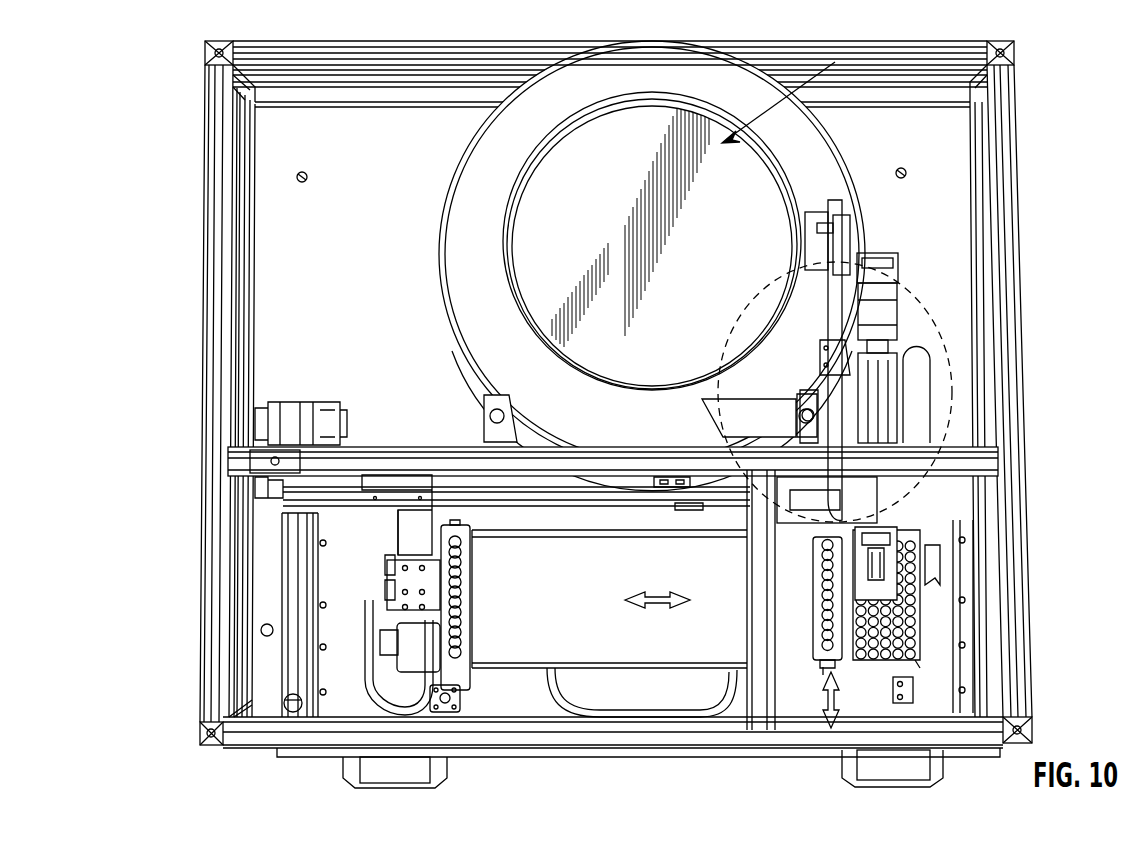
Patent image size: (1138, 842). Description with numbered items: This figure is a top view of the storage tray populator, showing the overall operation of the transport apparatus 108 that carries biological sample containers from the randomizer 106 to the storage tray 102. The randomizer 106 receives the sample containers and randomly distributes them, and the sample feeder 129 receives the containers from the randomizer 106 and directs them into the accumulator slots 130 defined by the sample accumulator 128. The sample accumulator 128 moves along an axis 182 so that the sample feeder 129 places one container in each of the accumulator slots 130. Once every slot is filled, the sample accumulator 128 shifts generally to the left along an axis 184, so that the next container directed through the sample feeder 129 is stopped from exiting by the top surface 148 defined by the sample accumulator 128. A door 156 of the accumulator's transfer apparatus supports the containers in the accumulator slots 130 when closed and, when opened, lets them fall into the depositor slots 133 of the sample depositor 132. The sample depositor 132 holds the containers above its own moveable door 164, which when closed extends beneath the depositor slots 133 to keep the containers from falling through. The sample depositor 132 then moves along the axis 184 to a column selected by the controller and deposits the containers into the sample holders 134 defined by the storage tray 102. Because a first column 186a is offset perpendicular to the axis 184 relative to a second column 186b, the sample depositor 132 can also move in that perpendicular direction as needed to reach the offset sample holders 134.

The storage tray 102 is at (607, 576).
The randomizer 106 is at (830, 154).
The transport apparatus 108 is at (1037, 610).
The sample accumulator 128 is at (823, 667).
The sample feeder 129 is at (922, 306).
The accumulator slots 130 is at (912, 633).
The sample depositor 132 is at (430, 688).
The depositor slots 133 is at (450, 583).
The sample holders 134 is at (912, 620).
The top surface 148 is at (823, 633).
The door 156 is at (823, 667).
The moveable door 164 is at (477, 678).
The axis 182 is at (823, 700).
The axis 184 is at (660, 605).
The first column 186a is at (903, 662).
The second column 186b is at (920, 667).